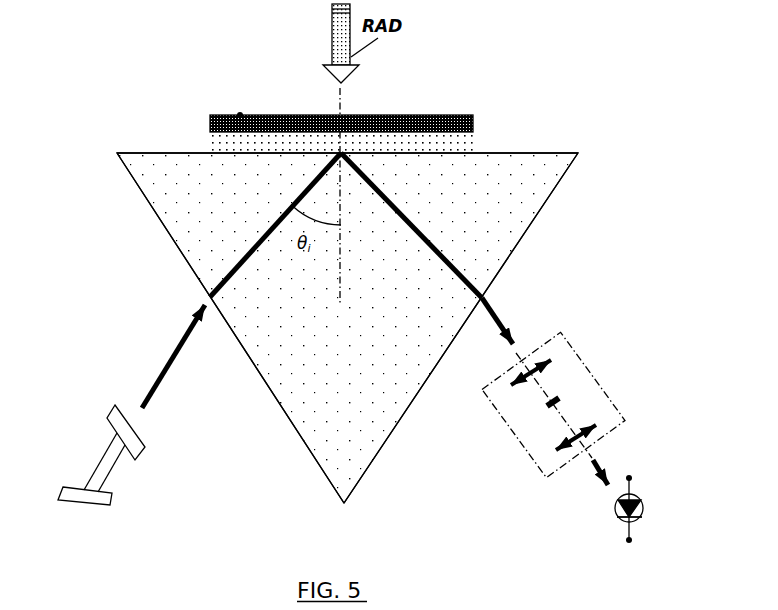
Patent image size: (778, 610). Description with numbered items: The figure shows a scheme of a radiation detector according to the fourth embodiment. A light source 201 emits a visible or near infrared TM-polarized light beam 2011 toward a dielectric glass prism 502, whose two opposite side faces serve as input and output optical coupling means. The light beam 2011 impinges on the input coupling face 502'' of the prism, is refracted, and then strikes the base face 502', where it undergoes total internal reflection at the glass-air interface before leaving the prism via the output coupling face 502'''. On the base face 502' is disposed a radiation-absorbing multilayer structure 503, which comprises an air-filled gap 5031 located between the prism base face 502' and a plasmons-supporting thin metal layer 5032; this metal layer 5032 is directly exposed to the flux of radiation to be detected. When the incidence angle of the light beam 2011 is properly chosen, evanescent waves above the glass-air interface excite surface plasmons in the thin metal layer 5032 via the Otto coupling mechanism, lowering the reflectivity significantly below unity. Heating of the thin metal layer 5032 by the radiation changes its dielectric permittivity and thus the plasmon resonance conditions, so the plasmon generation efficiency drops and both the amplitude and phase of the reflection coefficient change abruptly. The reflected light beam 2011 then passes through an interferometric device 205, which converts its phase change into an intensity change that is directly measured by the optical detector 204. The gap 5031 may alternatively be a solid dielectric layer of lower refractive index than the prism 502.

The light source 201 is at (97, 470).
The light beam 2011 is at (168, 368).
The optical detector 204 is at (645, 505).
The interferometric device 205 is at (573, 378).
The dielectric prism 502 is at (347, 337).
The base face 502' is at (375, 124).
The input coupling face 502'' is at (181, 328).
The output coupling face 502''' is at (524, 328).
The radiation-absorbing multilayer structure 503 is at (254, 137).
The air-filled gap 5031 is at (207, 147).
The plasmons-supporting thin metal layer 5032 is at (240, 115).